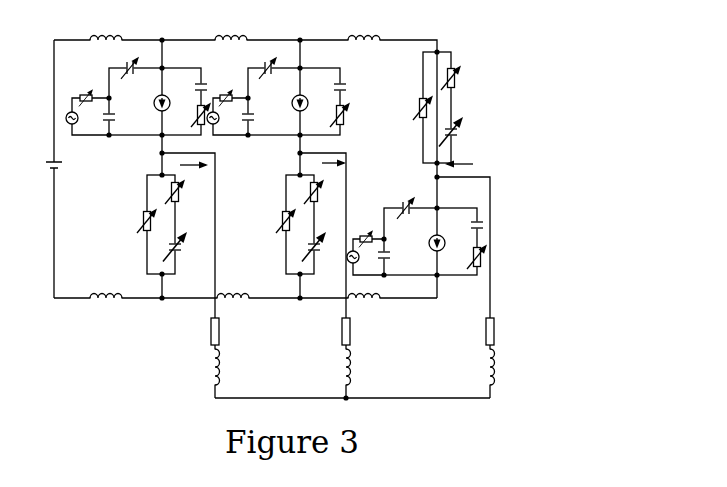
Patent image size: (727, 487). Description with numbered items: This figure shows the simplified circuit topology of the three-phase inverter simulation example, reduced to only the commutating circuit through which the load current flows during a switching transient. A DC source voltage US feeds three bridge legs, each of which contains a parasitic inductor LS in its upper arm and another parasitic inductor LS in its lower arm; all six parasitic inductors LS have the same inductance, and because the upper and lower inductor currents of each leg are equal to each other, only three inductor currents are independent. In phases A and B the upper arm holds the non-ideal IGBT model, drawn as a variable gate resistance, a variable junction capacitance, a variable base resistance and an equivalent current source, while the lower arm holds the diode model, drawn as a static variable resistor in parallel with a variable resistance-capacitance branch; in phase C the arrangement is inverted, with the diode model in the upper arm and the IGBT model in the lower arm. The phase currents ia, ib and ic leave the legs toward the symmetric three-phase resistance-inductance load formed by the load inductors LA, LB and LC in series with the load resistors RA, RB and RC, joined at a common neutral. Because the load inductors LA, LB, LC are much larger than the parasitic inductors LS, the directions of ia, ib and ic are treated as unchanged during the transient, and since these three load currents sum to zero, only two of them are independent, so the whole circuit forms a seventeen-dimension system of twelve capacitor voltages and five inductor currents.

The parasitic inductor LS is at (235, 174).
The DC source voltage US is at (64, 168).
The phase A load current ia is at (194, 173).
The phase B load current ib is at (334, 172).
The phase C load current ic is at (459, 158).
The phase A load inductor LA is at (202, 331).
The phase B load inductor LB is at (333, 331).
The phase C load inductor LC is at (478, 331).
The phase A load resistor RA is at (201, 367).
The phase B load resistor RB is at (333, 367).
The phase C load resistor RC is at (478, 367).